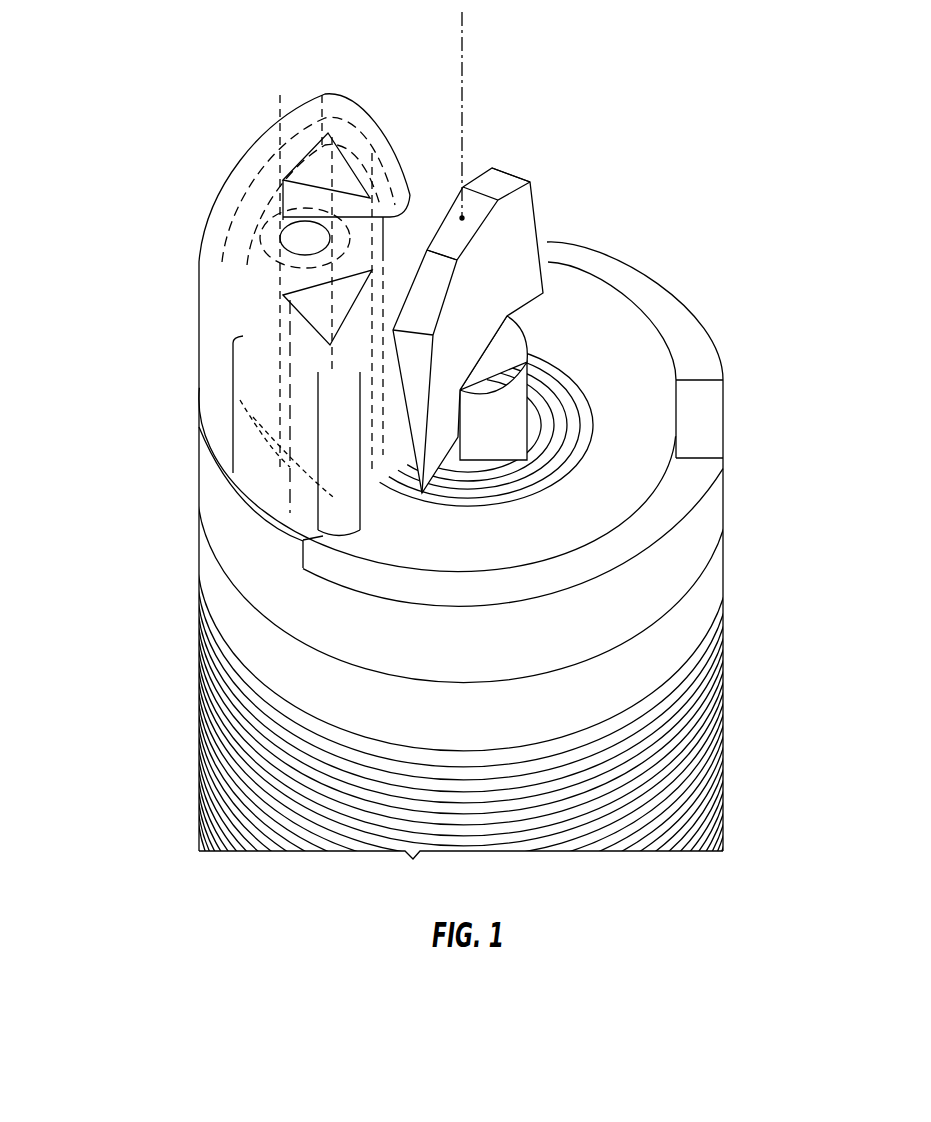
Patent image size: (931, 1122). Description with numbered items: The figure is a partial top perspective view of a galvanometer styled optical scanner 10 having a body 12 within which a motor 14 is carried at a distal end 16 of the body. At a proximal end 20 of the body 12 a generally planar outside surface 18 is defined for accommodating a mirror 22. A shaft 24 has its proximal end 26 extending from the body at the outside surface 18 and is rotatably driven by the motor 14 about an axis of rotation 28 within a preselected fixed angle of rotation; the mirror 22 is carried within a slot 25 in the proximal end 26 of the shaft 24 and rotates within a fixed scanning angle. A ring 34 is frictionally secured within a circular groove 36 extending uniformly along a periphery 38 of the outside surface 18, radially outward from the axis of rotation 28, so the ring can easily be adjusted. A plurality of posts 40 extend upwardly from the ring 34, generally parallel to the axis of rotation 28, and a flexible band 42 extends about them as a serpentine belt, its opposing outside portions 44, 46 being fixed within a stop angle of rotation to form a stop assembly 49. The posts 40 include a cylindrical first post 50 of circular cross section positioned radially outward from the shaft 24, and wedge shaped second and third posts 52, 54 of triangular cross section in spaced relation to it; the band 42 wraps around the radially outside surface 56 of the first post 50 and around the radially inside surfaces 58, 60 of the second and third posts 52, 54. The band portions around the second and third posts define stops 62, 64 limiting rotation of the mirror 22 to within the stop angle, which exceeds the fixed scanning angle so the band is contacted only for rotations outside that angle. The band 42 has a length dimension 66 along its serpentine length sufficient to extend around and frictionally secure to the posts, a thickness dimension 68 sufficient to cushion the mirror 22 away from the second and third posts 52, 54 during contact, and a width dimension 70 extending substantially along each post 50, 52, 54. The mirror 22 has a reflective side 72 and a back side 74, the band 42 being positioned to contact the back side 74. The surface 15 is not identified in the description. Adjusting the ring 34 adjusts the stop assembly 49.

The optical scanner 10 is at (640, 122).
The body 12 is at (708, 590).
The motor 14 is at (195, 762).
The top surface of body 15 is at (600, 503).
The distal end 16 is at (727, 822).
The outside surface 18 is at (580, 310).
The proximal end 20 is at (182, 471).
The mirror 22 is at (538, 217).
The shaft 24 is at (527, 338).
The slot 25 is at (508, 352).
The proximal end of shaft 26 is at (478, 428).
The axis of rotation 28 is at (470, 80).
The ring 34 is at (693, 363).
The groove 36 is at (677, 452).
The periphery 38 is at (372, 573).
The posts 40 is at (325, 300).
The flexible band 42 is at (353, 110).
The outside portion 44 is at (377, 165).
The outside portion 46 is at (353, 377).
The stop assembly 49 is at (180, 150).
The first post 50 is at (290, 240).
The second post 52 is at (333, 150).
The third post 54 is at (293, 313).
The radially outside surface 56 is at (260, 230).
The radially inside surface 58 is at (392, 213).
The radially inside surface 60 is at (457, 261).
The stop 62 is at (383, 137).
The stop 64 is at (390, 468).
The length dimension 66 is at (263, 283).
The thickness dimension 68 is at (207, 190).
The width dimension 70 is at (232, 414).
The reflective side 72 is at (490, 345).
The back side 74 is at (470, 162).